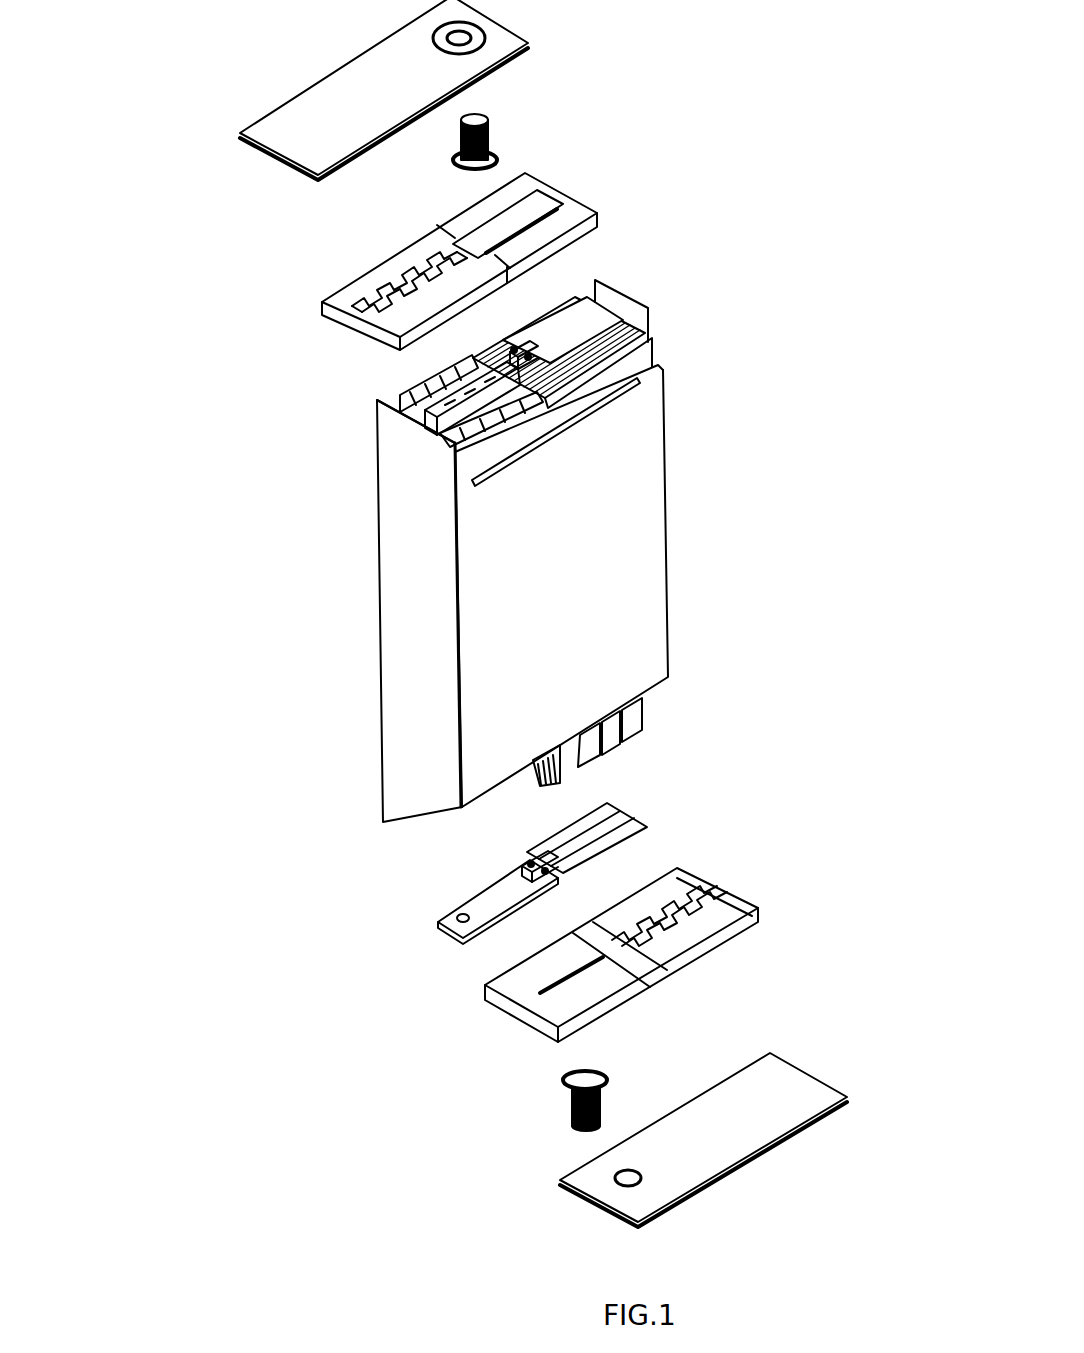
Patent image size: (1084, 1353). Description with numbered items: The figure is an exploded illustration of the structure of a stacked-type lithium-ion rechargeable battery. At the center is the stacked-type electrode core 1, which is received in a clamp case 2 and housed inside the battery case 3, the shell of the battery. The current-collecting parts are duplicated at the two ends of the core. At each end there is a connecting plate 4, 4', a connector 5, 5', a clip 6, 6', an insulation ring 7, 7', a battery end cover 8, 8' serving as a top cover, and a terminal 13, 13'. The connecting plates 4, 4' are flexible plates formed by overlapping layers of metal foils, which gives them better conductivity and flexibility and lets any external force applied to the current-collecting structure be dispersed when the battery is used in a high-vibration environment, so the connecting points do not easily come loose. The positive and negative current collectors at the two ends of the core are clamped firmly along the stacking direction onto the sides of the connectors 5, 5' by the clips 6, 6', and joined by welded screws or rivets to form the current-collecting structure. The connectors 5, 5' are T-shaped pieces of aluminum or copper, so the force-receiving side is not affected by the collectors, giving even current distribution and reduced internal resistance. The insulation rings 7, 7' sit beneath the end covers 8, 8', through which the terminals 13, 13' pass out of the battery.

The stacked-type electrode core 1 is at (585, 368).
The clamp case 2 is at (413, 462).
The battery case 3 is at (408, 555).
The connecting plate 4 is at (640, 297).
The connector 5 is at (344, 366).
The clip 6 is at (594, 403).
The insulation ring 7 is at (368, 261).
The battery end cover 8 is at (328, 90).
The terminal 13 is at (603, 88).
The connecting plate 4' is at (392, 902).
The connector 5' is at (384, 850).
The clip 6' is at (656, 804).
The insulation ring 7' is at (668, 946).
The battery end cover 8' is at (729, 1116).
The terminal 13' is at (421, 1099).